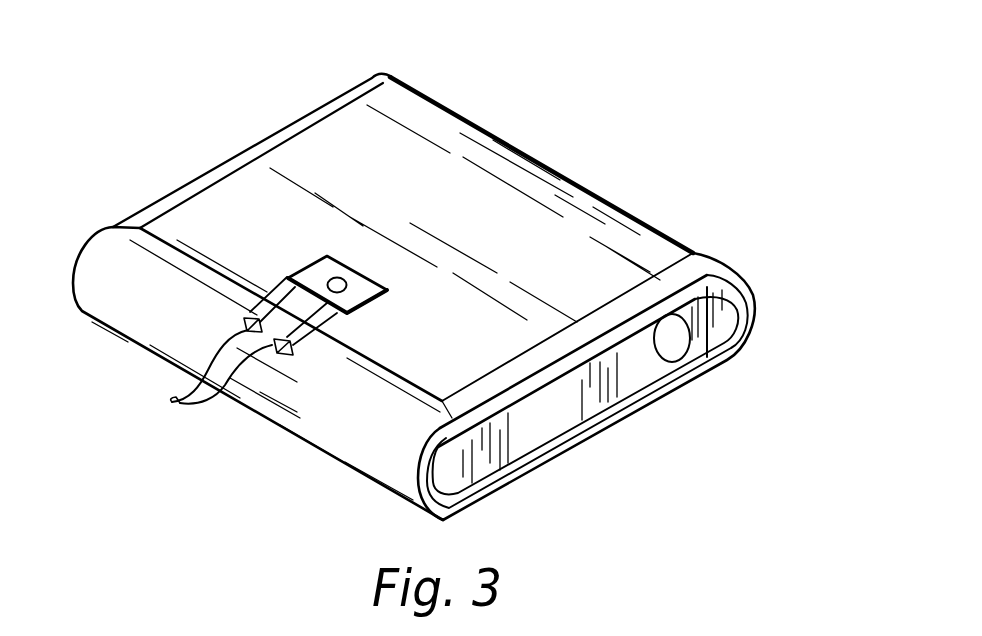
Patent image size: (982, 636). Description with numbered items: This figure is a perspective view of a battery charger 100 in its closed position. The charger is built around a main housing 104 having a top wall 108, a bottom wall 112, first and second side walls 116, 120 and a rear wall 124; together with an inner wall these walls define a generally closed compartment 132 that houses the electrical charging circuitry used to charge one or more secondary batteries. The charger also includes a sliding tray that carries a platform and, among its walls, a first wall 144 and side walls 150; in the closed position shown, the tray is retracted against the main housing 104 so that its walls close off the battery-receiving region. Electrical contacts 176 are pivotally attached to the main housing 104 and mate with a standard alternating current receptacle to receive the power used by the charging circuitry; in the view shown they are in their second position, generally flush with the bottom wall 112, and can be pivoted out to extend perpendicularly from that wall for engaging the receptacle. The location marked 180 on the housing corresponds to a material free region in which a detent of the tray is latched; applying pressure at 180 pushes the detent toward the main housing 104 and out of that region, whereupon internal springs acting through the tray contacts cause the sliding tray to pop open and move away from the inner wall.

The battery charger 100 is at (565, 87).
The main housing 104 is at (158, 192).
The top wall 108 is at (541, 464).
The bottom wall 112 is at (484, 232).
The first side wall 116 is at (296, 119).
The second side wall 120 is at (563, 400).
The rear wall 124 is at (288, 423).
The compartment 132 is at (270, 193).
The first wall 144 is at (593, 191).
The side walls 150 is at (357, 83).
The electrical contacts 176 is at (176, 401).
The pressure location 180 is at (675, 350).